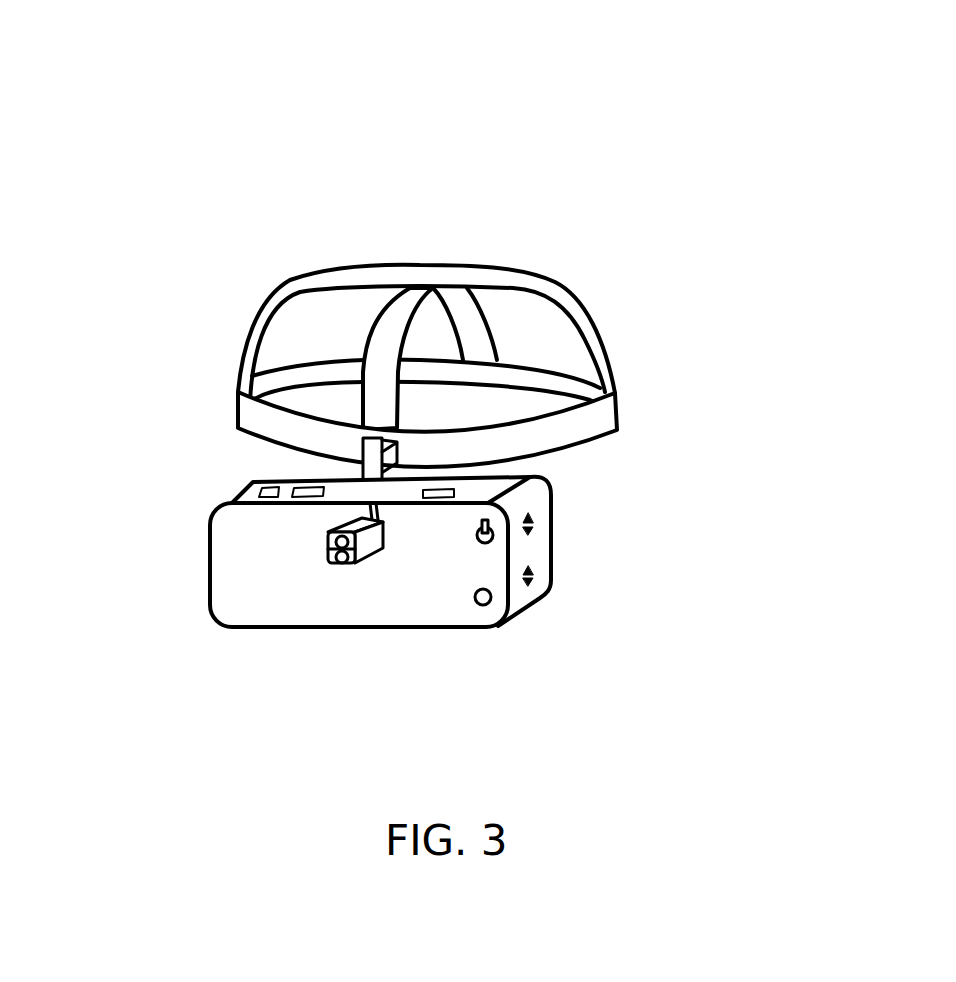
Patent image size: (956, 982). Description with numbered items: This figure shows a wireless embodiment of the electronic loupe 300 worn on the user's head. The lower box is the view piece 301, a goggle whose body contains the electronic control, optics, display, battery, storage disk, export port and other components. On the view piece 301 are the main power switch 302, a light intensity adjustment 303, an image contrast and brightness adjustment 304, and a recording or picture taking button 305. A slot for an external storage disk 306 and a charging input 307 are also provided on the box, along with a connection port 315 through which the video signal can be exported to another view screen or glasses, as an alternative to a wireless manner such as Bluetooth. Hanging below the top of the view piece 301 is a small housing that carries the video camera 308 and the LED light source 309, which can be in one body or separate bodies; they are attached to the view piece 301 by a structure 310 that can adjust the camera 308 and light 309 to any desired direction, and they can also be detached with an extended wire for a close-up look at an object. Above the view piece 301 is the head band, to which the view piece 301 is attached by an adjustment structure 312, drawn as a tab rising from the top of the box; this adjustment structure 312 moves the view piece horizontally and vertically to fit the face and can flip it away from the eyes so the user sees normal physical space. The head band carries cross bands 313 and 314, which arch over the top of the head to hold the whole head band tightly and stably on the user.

The electronic loupe 300 is at (437, 362).
The view piece 301 is at (250, 568).
The main power switch 302 is at (490, 538).
The light intensity adjustment 303 is at (533, 530).
The image contrast and brightness adjustment 304 is at (532, 582).
The recording or picture taking button 305 is at (487, 602).
The slot for external storage disk 306 is at (287, 488).
The charging input 307 is at (262, 492).
The video camera 308 is at (340, 563).
The LED light source 309 is at (360, 561).
The structure 310 is at (385, 522).
The adjustment structure 312 is at (398, 457).
The cross band 313 is at (592, 317).
The cross band 314 is at (385, 322).
The connection port 315 is at (453, 492).